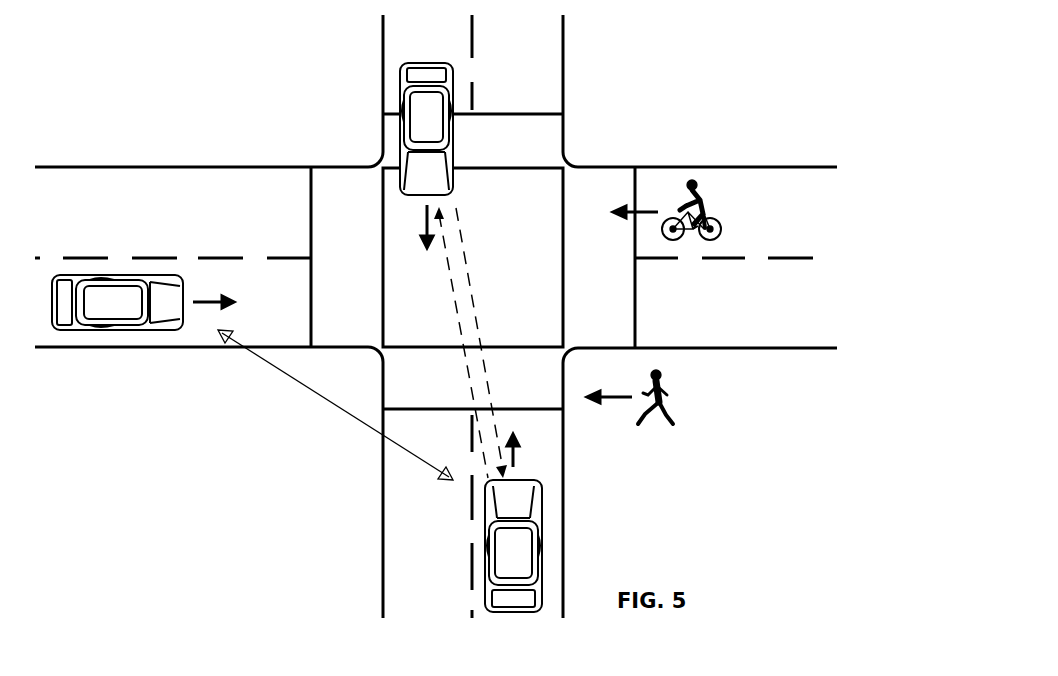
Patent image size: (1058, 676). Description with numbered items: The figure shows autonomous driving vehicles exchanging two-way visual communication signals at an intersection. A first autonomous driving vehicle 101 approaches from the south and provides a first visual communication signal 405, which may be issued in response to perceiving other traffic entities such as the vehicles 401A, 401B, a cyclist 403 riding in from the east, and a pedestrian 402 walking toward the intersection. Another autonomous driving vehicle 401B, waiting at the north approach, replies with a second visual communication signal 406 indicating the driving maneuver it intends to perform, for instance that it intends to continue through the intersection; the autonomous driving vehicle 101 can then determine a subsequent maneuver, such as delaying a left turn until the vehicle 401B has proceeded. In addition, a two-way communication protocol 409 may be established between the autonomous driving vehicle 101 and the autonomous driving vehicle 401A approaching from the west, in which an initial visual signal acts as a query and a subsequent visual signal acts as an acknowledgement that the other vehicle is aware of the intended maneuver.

The autonomous driving vehicle 101 is at (502, 562).
The autonomous driving vehicle 401A is at (92, 309).
The autonomous driving vehicle 401B is at (426, 129).
The pedestrian 402 is at (651, 382).
The cyclist 403 is at (689, 194).
The first visual communication signal 405 is at (461, 325).
The second visual communication signal 406 is at (473, 302).
The two-way communication protocol 409 is at (330, 402).